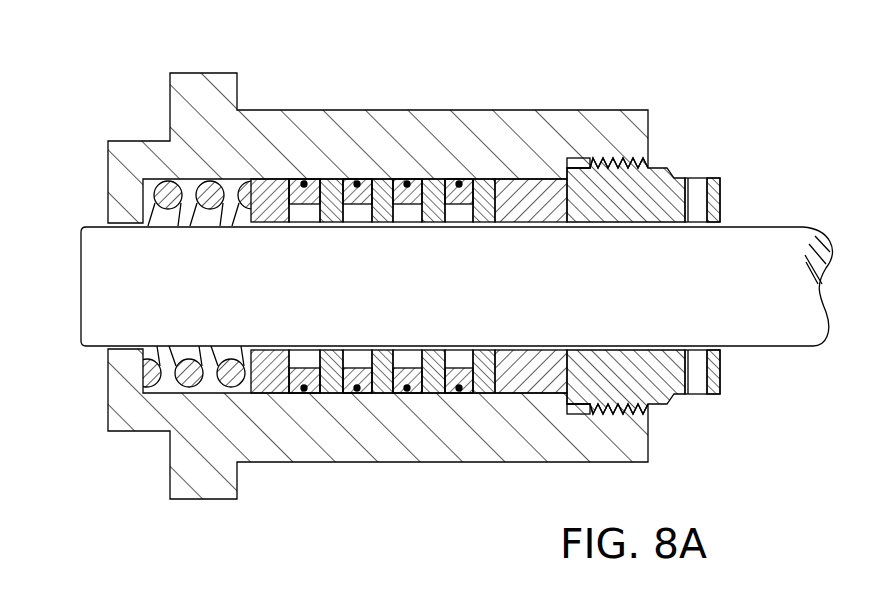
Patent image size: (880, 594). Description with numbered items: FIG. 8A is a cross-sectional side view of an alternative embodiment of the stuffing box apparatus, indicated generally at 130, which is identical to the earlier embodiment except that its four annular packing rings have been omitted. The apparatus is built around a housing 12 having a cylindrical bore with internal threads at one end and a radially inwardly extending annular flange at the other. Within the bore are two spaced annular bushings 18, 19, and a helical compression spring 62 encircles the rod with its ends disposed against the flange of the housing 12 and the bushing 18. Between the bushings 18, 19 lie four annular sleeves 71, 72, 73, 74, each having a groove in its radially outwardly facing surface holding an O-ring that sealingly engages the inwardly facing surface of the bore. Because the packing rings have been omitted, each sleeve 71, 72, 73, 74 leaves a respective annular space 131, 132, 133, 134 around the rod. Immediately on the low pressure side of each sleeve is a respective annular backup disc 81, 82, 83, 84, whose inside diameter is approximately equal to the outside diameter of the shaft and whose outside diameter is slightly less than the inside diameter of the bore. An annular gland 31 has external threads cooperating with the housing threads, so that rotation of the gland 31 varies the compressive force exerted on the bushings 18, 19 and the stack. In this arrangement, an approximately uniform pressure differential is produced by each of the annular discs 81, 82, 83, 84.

The seal assembly 130 is at (105, 85).
The housing 12 is at (107, 411).
The helical compression spring 62 is at (187, 377).
The annular bushing 18 is at (270, 380).
The annular sleeve 71 is at (297, 390).
The annular sleeve 72 is at (350, 390).
The annular sleeve 73 is at (397, 390).
The annular sleeve 74 is at (448, 390).
The annular backup disc 81 is at (330, 353).
The annular backup disc 82 is at (385, 355).
The annular backup disc 83 is at (437, 355).
The annular backup disc 84 is at (481, 360).
The annular space 131 is at (303, 213).
The annular space 132 is at (358, 217).
The annular space 133 is at (407, 215).
The annular space 134 is at (460, 217).
The annular bushing 19 is at (533, 385).
The annular gland 31 is at (675, 391).